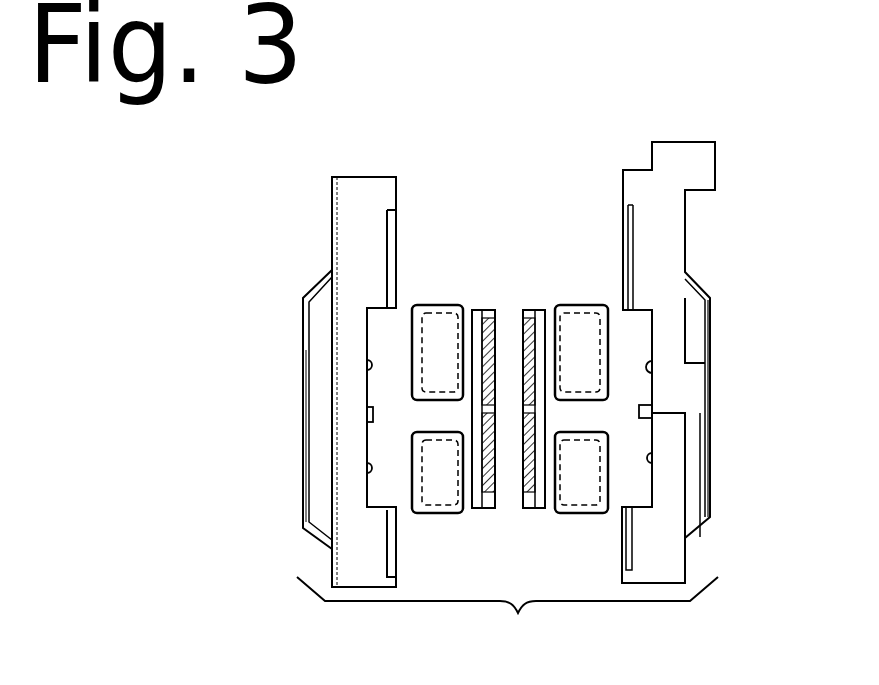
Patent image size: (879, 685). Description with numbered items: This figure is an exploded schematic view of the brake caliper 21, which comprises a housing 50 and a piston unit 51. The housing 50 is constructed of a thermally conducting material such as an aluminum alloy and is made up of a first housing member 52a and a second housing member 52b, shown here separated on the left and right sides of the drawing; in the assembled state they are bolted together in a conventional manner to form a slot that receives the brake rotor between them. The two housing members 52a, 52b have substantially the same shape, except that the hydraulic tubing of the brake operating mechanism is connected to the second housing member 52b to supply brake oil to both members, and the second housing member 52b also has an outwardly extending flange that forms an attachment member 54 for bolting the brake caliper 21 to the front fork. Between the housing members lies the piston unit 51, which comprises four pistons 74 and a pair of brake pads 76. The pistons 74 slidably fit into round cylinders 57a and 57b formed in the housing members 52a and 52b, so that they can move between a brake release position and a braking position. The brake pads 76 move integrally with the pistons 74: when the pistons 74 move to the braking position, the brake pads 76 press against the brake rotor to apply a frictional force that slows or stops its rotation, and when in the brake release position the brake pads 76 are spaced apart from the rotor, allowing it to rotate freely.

The brake caliper 21 is at (750, 189).
The housing 50 is at (357, 176).
The piston unit 51 is at (508, 384).
The first housing member 52a is at (302, 333).
The second housing member 52b is at (712, 333).
The attachment member 54 is at (682, 142).
The round cylinders 57a is at (367, 371).
The round cylinders 57b is at (651, 459).
The pistons 74 is at (436, 305).
The brake pads 76 is at (523, 508).